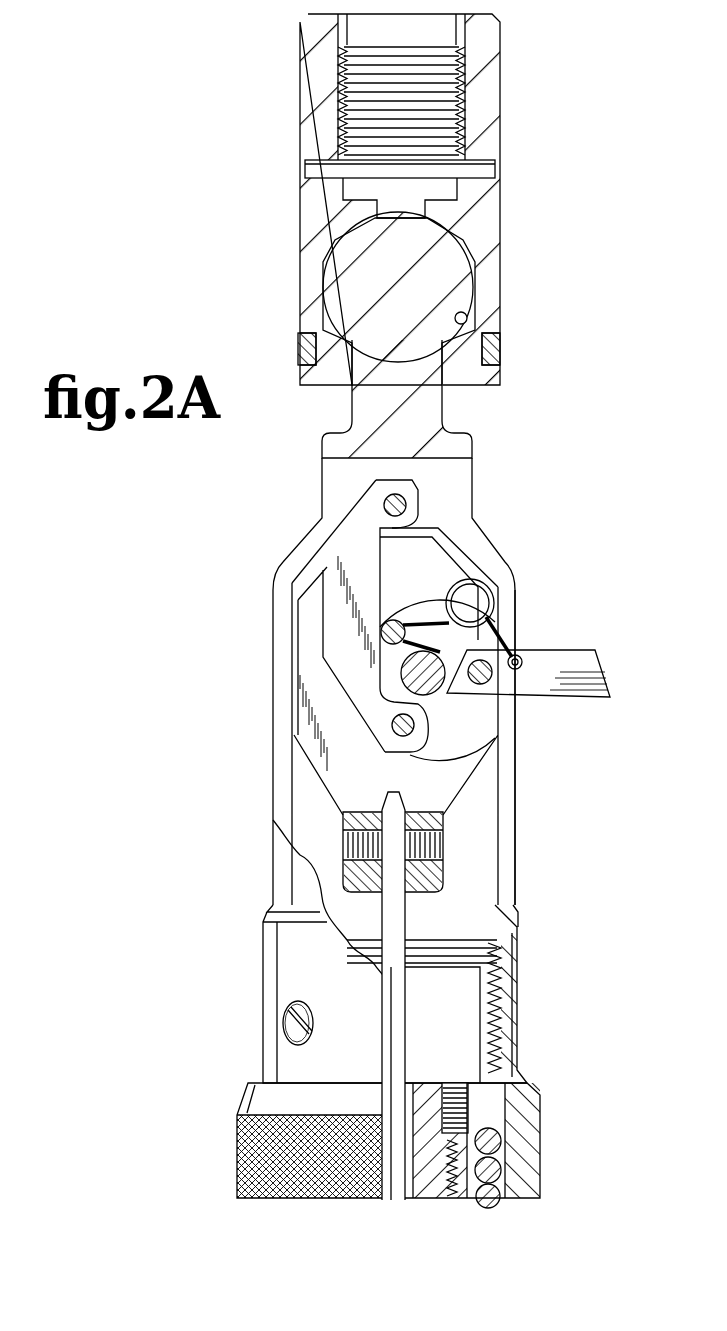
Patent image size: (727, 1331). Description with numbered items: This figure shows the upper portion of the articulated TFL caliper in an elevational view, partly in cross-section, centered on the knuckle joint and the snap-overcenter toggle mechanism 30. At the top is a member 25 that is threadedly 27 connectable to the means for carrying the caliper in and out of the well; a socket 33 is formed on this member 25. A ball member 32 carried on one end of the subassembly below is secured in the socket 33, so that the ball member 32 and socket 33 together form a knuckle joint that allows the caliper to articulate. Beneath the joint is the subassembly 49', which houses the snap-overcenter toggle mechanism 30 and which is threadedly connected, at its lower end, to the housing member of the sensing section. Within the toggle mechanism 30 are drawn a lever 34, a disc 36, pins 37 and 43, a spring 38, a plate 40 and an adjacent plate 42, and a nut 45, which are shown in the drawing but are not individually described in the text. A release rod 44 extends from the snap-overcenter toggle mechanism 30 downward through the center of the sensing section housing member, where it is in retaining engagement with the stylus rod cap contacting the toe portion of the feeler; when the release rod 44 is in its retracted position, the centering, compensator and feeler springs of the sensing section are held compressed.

The member 25 is at (490, 92).
The threaded connection 27 is at (455, 66).
The snap-overcenter toggle mechanism 30 is at (308, 779).
The ball member 32 is at (462, 290).
The socket 33 is at (467, 318).
The lever 34 is at (578, 662).
The cam disc 36 is at (470, 720).
The stop pin 37 is at (408, 737).
The spring 38 is at (428, 606).
The latch plate 40 is at (325, 628).
The guide plate 42 is at (302, 700).
The pivot pin 43 is at (394, 620).
The release rod 44 is at (400, 921).
The nut 45 is at (432, 850).
The subassembly 49' is at (554, 727).